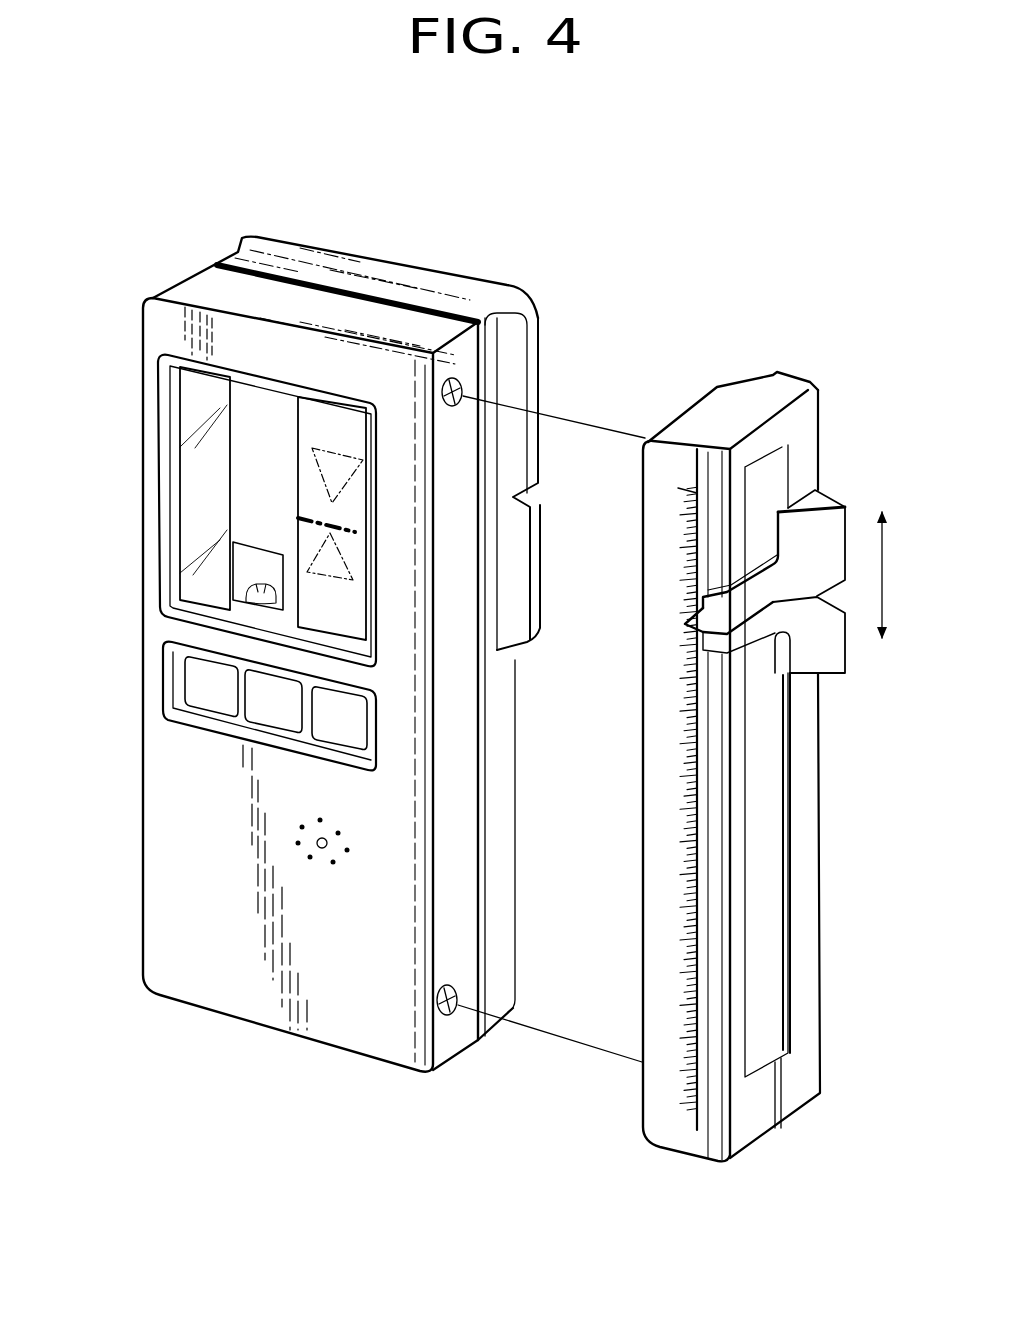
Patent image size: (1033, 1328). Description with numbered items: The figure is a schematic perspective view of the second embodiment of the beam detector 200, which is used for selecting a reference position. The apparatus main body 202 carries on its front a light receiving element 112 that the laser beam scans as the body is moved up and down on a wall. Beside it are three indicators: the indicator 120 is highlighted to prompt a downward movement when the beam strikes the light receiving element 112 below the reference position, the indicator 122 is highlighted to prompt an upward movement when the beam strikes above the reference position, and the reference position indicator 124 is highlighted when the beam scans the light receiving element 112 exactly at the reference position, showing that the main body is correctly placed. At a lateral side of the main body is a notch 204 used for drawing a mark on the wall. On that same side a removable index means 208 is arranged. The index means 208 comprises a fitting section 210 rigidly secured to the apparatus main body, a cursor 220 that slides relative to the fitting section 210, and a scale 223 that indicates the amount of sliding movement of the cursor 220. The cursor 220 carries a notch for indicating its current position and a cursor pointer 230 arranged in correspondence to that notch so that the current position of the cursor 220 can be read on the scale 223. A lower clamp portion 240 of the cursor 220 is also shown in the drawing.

The display window 112 is at (197, 395).
The downward direction indicator 120 is at (325, 465).
The upward direction indicator 122 is at (327, 557).
The center level indicator 124 is at (300, 507).
The measuring scale unit 200 is at (731, 646).
The receiver main body 202 is at (382, 256).
The clip 204 is at (543, 485).
The scale body 208 is at (742, 364).
The top end portion of scale body 210 is at (773, 400).
The slider 220 is at (823, 535).
The graduations 223 is at (690, 706).
The pointer 230 is at (683, 626).
The lower clamp portion of slider 240 is at (823, 597).